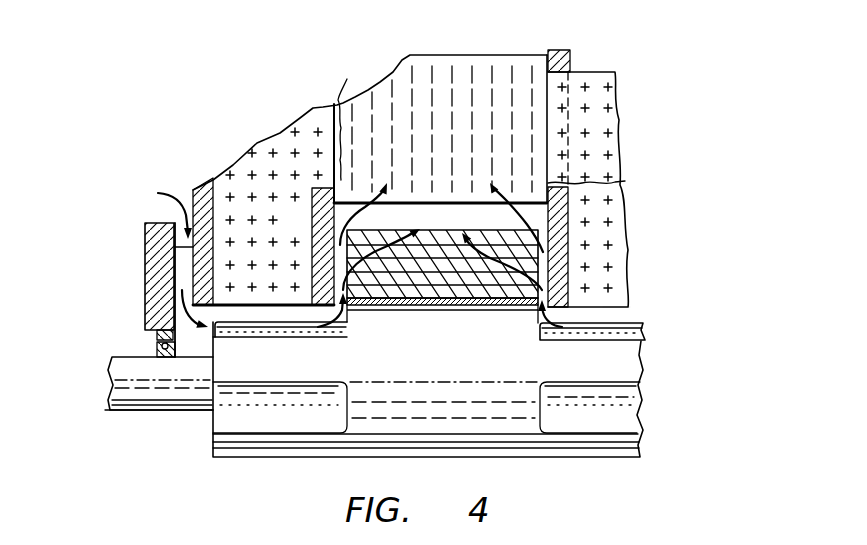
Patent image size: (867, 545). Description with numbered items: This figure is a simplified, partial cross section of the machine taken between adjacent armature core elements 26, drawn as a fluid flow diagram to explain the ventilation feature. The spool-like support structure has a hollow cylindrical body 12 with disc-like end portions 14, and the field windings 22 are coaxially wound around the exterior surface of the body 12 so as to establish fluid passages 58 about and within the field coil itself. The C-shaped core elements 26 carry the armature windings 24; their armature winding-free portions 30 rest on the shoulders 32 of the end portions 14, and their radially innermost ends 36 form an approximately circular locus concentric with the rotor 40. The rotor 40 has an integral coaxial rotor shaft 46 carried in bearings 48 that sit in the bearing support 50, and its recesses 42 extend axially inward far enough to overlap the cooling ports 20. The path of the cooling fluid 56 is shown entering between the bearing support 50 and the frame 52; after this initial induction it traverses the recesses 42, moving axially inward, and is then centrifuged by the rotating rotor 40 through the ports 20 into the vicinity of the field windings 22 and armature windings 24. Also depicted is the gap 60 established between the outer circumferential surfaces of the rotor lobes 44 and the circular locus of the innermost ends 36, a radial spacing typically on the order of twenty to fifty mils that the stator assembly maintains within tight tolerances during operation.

The hollow cylindrical body 12 is at (441, 309).
The disc-like end portions 14 is at (570, 50).
The cooling ports 20 is at (333, 315).
The field windings 22 is at (410, 290).
The armature windings 24 is at (481, 196).
The armature core elements 26 is at (613, 117).
The armature winding-free portions 30 is at (643, 184).
The shoulders 32 is at (312, 203).
The radially innermost ends 36 is at (603, 307).
The rotor 40 is at (474, 384).
The recesses 42 is at (301, 432).
The rotor lobes 44 is at (252, 370).
The rotor shaft 46 is at (182, 384).
The bearings 48 is at (155, 345).
The bearing support 50 is at (145, 256).
The frame 52 is at (202, 190).
The cooling fluid 56 is at (568, 347).
The fluid passages 58 is at (495, 226).
The gap 60 is at (253, 314).